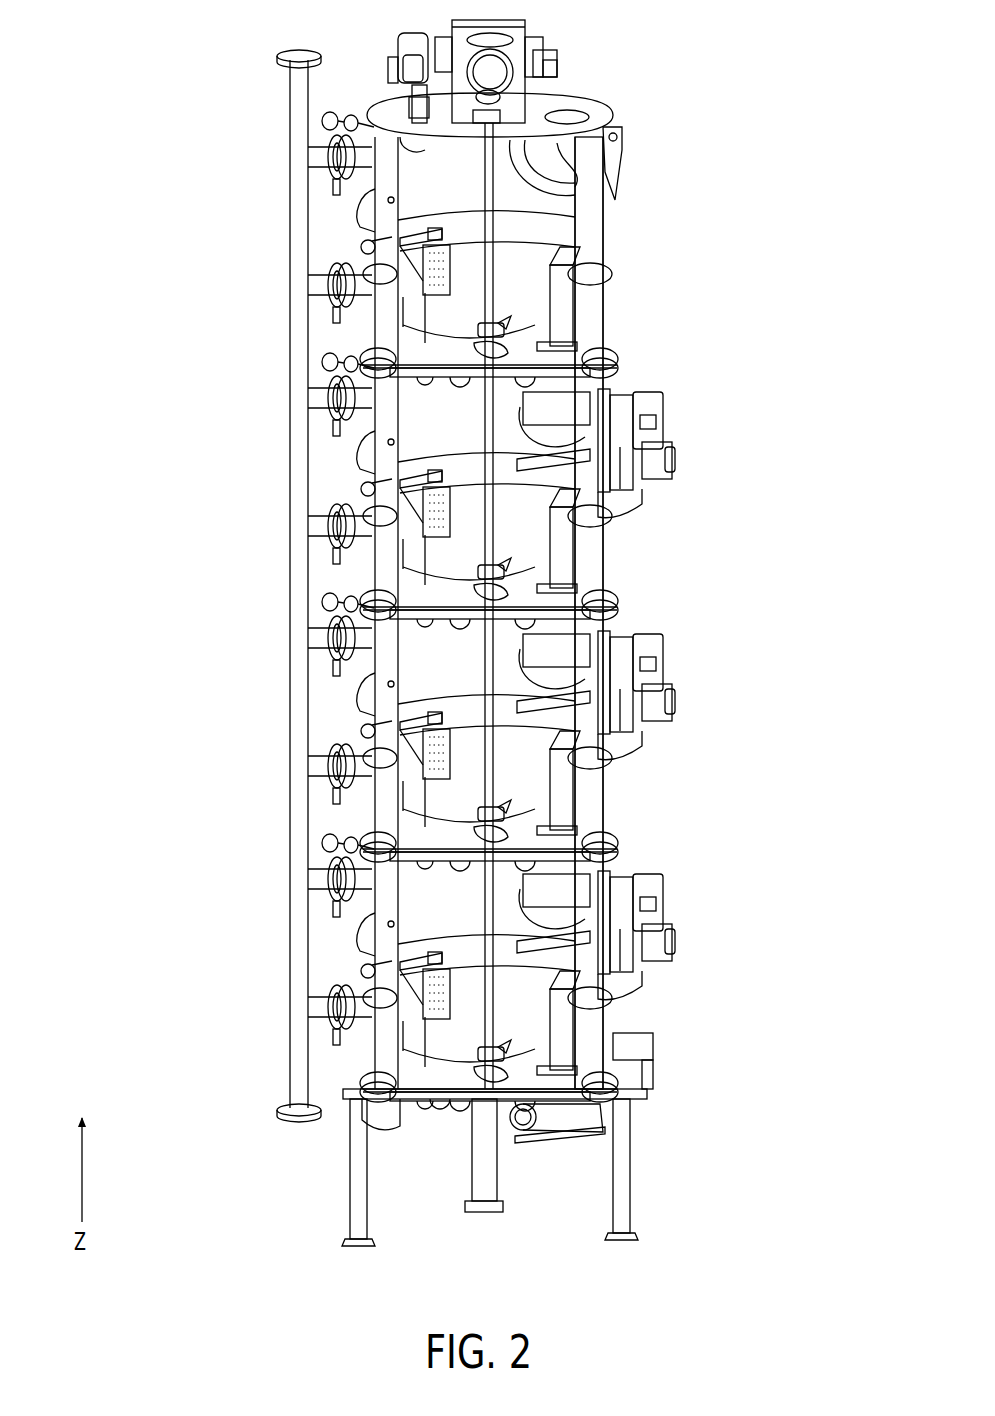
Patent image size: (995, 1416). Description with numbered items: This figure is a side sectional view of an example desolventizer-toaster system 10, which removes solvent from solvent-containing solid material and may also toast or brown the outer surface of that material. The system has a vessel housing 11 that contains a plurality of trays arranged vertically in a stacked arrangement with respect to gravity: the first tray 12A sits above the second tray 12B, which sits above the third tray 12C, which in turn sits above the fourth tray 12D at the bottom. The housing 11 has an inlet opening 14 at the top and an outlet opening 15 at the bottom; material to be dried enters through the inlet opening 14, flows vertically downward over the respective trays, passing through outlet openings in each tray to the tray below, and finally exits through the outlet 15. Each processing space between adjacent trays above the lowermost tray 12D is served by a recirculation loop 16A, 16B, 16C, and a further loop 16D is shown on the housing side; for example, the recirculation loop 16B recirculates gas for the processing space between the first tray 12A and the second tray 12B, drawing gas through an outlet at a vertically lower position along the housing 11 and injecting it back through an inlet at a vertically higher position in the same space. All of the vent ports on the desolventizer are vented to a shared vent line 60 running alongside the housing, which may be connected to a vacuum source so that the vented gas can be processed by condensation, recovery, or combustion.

The desolventizer-toaster system 10 is at (512, 623).
The vessel housing 11 is at (592, 251).
The first tray 12A is at (612, 366).
The second tray 12B is at (605, 605).
The third tray 12C is at (612, 848).
The fourth tray 12D is at (616, 1086).
The inlet opening 14 is at (572, 113).
The outlet opening 15 is at (542, 1090).
The recirculation loop 16A is at (298, 161).
The recirculation loop 16B is at (288, 399).
The recirculation loop 16C is at (288, 639).
The fourth valve assembly 16D is at (288, 880).
The shared vent line 60 is at (302, 509).